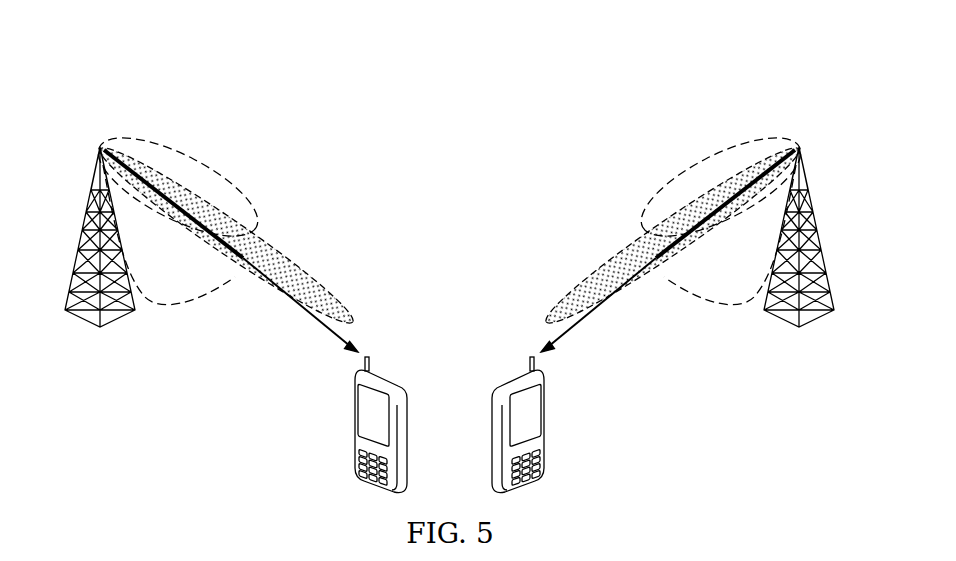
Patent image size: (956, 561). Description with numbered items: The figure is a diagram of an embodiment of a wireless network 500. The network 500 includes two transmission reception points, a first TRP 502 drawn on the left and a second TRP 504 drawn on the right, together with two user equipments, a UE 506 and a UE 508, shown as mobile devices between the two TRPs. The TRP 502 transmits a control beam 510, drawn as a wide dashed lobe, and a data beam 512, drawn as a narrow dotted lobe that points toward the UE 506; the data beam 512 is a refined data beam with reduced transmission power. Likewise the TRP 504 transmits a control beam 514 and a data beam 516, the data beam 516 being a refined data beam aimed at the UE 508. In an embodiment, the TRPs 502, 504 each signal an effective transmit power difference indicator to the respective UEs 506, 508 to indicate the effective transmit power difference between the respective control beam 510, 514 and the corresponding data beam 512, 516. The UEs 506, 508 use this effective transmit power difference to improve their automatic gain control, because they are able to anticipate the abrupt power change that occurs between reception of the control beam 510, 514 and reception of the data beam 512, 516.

The wireless network 500 is at (601, 67).
The transmission reception point 502 is at (85, 318).
The transmission reception point 504 is at (815, 317).
The UE 506 is at (356, 424).
The UE 508 is at (544, 424).
The control beam 510 is at (187, 173).
The data beam 512 is at (305, 268).
The control beam 514 is at (703, 173).
The data beam 516 is at (593, 267).